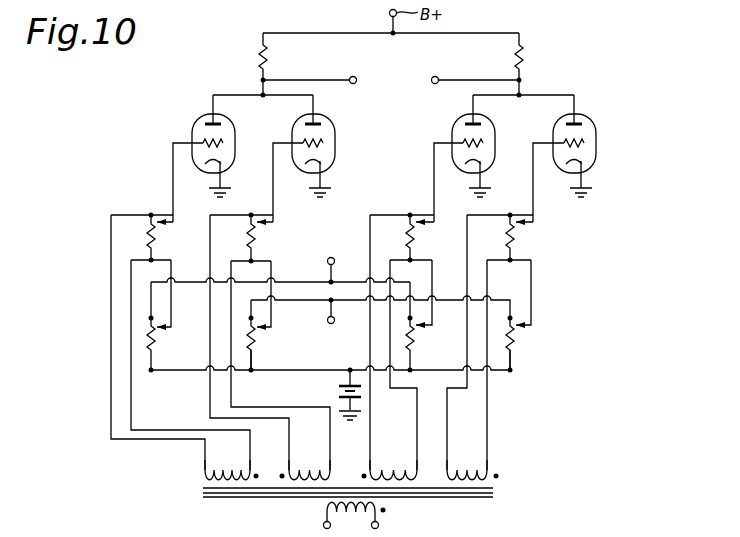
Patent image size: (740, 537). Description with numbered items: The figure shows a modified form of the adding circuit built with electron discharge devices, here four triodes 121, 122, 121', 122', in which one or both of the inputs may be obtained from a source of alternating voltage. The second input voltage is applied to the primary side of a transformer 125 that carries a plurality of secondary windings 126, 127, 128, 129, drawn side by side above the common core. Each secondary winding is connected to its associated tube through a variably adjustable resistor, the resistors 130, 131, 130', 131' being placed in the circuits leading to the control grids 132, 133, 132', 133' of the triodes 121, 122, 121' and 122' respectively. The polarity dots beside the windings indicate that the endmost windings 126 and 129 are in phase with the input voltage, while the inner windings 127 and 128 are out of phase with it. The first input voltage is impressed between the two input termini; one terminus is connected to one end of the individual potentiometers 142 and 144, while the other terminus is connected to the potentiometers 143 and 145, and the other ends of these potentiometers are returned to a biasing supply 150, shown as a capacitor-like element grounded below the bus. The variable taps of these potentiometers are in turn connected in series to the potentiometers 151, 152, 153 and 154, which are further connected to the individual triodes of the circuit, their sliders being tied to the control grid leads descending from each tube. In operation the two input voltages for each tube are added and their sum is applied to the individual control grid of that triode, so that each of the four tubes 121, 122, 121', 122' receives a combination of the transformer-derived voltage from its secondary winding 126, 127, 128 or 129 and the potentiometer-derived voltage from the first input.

The triode 121 is at (197, 134).
The triode 122 is at (341, 146).
The control grid 132 is at (164, 167).
The control grid 133 is at (266, 166).
The triode 121' is at (440, 146).
The triode 122' is at (612, 146).
The control grid 132' is at (426, 167).
The control grid 133' is at (525, 164).
The potentiometer 151 is at (155, 235).
The potentiometer 152 is at (256, 236).
The potentiometer 153 is at (415, 236).
The potentiometer 154 is at (515, 235).
The variably adjustable resistor 130 is at (177, 315).
The variably adjustable resistor 131 is at (280, 315).
The variably adjustable resistor 130' is at (437, 315).
The variably adjustable resistor 131' is at (549, 315).
The potentiometer 142 is at (149, 296).
The potentiometer 143 is at (255, 352).
The potentiometer 144 is at (409, 308).
The potentiometer 145 is at (515, 352).
The biasing supply 150 is at (339, 386).
The secondary winding 126 is at (228, 458).
The secondary winding 127 is at (308, 463).
The secondary winding 128 is at (398, 461).
The secondary winding 129 is at (473, 461).
The transformer 125 is at (479, 505).